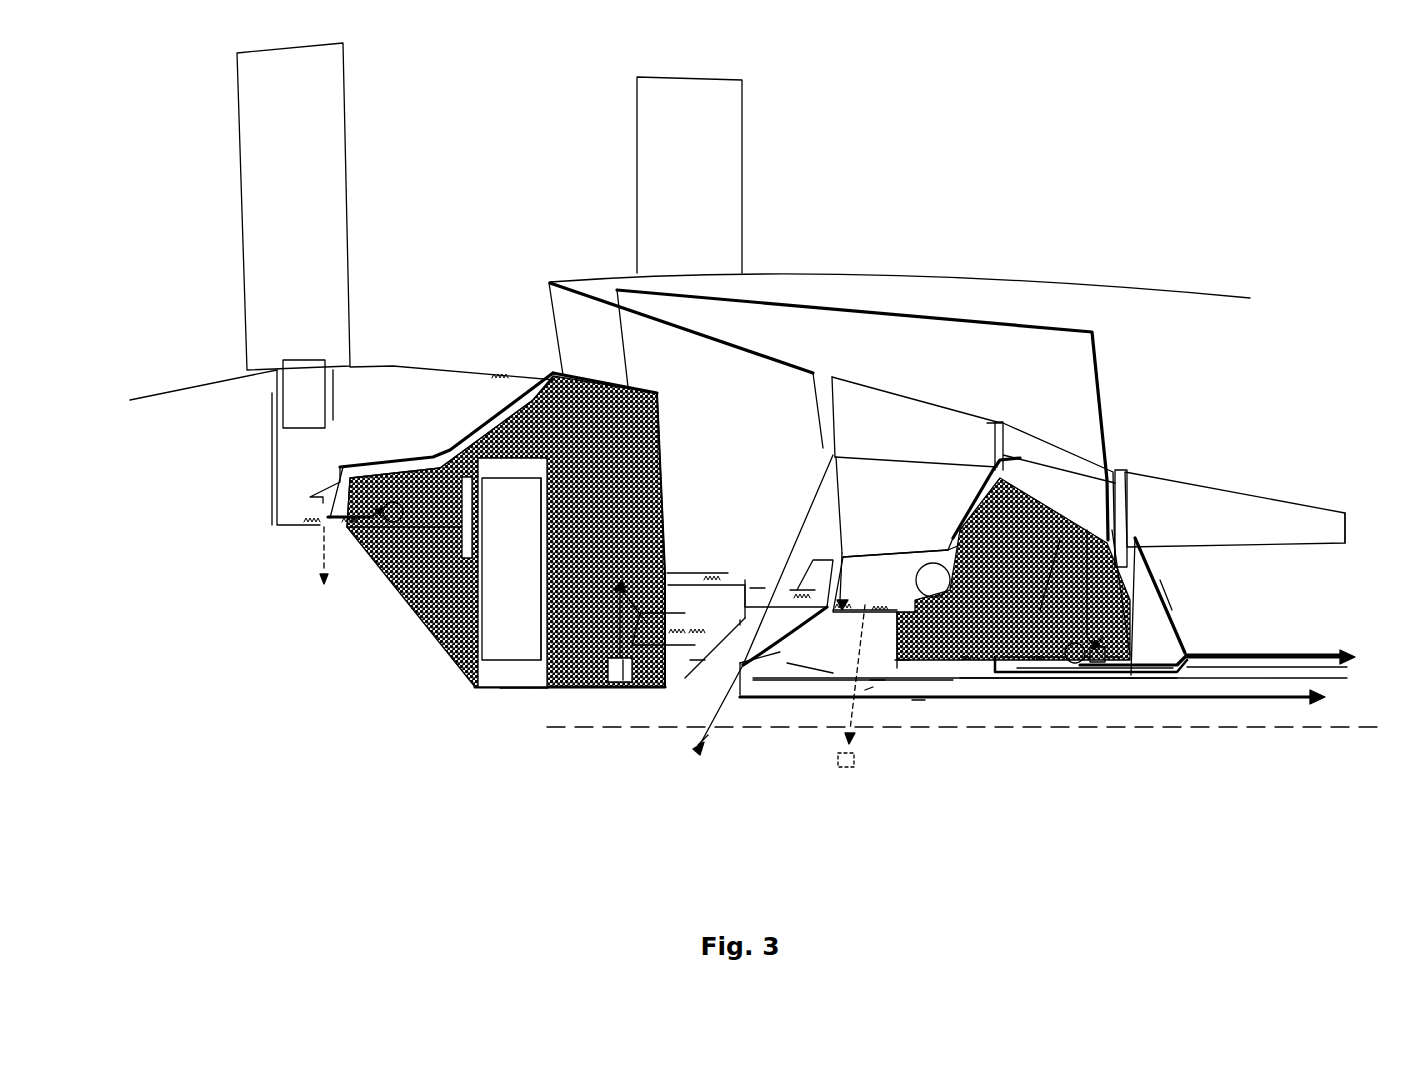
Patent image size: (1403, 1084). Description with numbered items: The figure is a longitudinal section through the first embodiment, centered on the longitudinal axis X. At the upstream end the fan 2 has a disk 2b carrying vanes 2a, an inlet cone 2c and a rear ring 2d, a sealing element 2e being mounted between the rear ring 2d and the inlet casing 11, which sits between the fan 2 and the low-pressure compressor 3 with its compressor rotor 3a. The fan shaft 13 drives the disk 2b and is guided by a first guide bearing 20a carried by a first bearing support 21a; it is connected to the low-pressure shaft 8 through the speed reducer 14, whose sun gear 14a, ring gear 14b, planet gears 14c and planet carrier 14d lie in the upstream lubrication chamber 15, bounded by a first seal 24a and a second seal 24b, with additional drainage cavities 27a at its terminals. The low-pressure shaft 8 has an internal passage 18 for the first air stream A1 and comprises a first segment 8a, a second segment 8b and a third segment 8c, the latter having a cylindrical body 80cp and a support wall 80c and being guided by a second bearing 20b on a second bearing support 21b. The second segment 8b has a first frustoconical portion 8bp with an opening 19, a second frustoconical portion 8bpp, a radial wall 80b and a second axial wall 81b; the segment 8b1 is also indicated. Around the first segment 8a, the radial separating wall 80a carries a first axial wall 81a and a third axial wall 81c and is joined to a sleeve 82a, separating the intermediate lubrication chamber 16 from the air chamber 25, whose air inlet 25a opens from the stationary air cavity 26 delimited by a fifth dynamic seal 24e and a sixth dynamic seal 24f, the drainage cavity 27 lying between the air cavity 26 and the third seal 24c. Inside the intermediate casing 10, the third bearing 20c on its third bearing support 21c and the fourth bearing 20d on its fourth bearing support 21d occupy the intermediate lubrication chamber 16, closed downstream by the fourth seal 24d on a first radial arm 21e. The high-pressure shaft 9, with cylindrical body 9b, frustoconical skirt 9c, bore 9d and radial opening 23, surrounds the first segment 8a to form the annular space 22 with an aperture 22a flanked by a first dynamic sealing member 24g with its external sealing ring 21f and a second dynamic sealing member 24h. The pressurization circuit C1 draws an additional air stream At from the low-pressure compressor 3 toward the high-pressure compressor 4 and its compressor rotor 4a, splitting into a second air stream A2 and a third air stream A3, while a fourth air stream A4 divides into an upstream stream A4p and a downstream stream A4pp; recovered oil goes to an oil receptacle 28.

The fan 2 is at (182, 133).
The vanes 2a is at (333, 122).
The disk 2b is at (270, 377).
The inlet cone 2c is at (163, 390).
The rear ring 2d is at (372, 365).
The sealing element 2e is at (500, 373).
The first bearing support 21a is at (462, 445).
The upstream stream A4p is at (383, 465).
The fan shaft 13 is at (275, 520).
The additional drainage cavities 27a is at (320, 525).
The first seal 24a is at (350, 575).
The first guide bearing 20a is at (385, 522).
The speed reducer 14 is at (483, 643).
The sun gear 14a is at (475, 690).
The ring gear 14b is at (530, 437).
The planet gears 14c is at (548, 503).
The upstream lubrication chamber 15 is at (601, 551).
The planet carrier 14d is at (600, 627).
The second bearing 20b is at (618, 684).
The cylindrical body 80cp is at (517, 690).
The third segment 8c is at (538, 690).
The longitudinal axis X is at (603, 727).
The support wall 80c is at (623, 662).
The second frustoconical portion 8bpp is at (740, 622).
The opening 19 is at (700, 662).
The first frustoconical portion 8bp is at (700, 750).
The internal passage 18 is at (800, 703).
The low-pressure shaft 8 is at (1330, 682).
The casing wall 8b1 is at (770, 662).
The air chamber 25 is at (784, 653).
The second segment 8b is at (800, 655).
The oil receptacle 28 is at (845, 768).
The first axial wall 81a is at (868, 700).
The first segment 8a is at (877, 682).
The radial separating wall 80a is at (903, 662).
The third axial wall 81c is at (918, 702).
The second dynamic sealing member 24h is at (990, 665).
The first air stream A1 is at (1010, 675).
The aperture 22a is at (1055, 650).
The sleeve 82a is at (1020, 676).
The first dynamic sealing member 24g is at (1037, 672).
The fourth bearing 20d is at (1075, 668).
The second air stream A2 is at (1098, 673).
The fourth seal 24d is at (1160, 627).
The radial opening 23 is at (1182, 685).
The annular space 22 is at (1220, 676).
The cylindrical body 9b is at (1262, 680).
The high-pressure shaft 9 is at (1295, 667).
The third air stream A3 is at (1258, 660).
The frustoconical skirt 9c is at (1180, 575).
The bore 9d is at (1172, 608).
The compressor rotor 4a is at (1322, 515).
The high-pressure compressor 4 is at (1232, 503).
The first radial arm 21e is at (1170, 600).
The fourth bearing support 21d is at (1130, 590).
The additional air stream At is at (1107, 510).
The intermediate casing 10 is at (1020, 437).
The third bearing support 21c is at (1003, 428).
The compressor rotor 3a is at (987, 423).
The pressurization circuit C1 is at (977, 497).
The third bearing 20c is at (940, 560).
The low-pressure compressor 3 is at (870, 390).
The air inlet 25a is at (823, 375).
The third seal 24c is at (943, 540).
The fifth dynamic seal 24e is at (797, 585).
The second axial wall 81b is at (758, 588).
The radial wall 80b is at (757, 585).
The downstream stream A4pp is at (673, 473).
The second seal 24b is at (683, 622).
The air cavity 26 is at (820, 573).
The sixth dynamic seal 24f is at (845, 598).
The drainage cavity 27 is at (874, 570).
The intermediate lubrication chamber 16 is at (1013, 569).
The external sealing ring 21f is at (990, 537).
The inlet casing 11 is at (748, 363).
The second bearing support 21b is at (696, 412).
The fourth air stream A4 is at (618, 352).